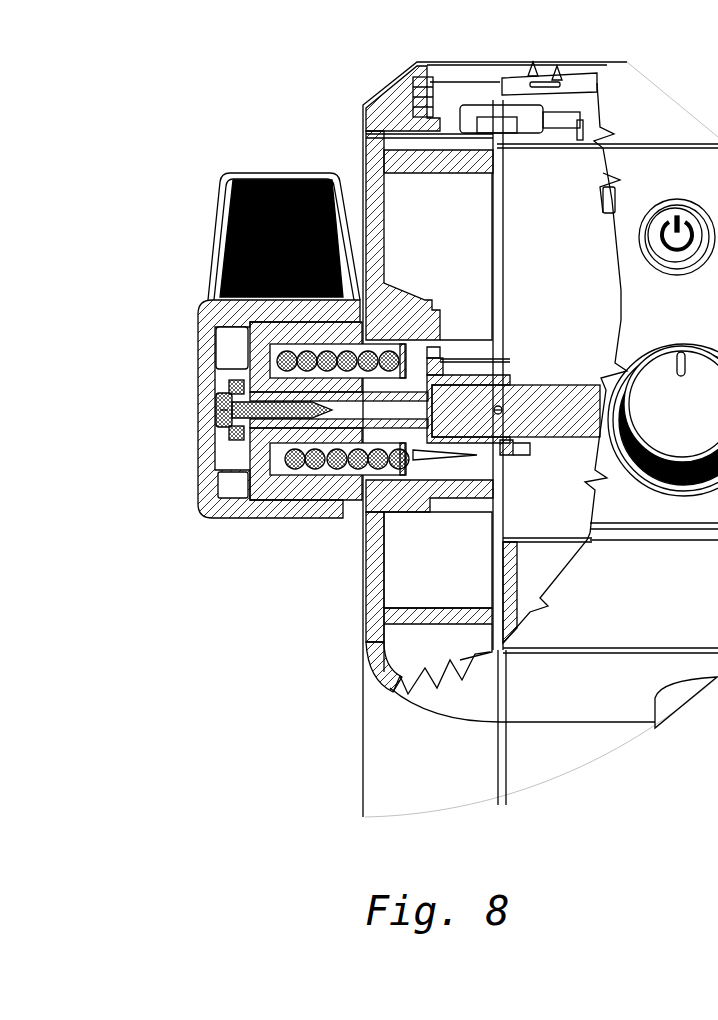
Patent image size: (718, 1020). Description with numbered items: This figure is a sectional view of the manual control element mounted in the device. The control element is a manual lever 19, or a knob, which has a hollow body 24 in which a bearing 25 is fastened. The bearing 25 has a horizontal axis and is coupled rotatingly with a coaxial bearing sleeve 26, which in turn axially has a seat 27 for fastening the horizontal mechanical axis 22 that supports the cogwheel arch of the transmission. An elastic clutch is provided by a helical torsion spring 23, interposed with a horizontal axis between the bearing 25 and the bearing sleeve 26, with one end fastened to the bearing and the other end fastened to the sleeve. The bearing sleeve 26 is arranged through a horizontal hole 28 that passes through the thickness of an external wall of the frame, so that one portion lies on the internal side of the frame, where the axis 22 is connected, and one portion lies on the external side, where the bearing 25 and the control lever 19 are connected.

The manual lever 19 is at (219, 178).
The horizontal mechanical axis 22 is at (557, 403).
The torsion spring 23 is at (273, 500).
The hollow body 24 is at (197, 352).
The bearing 25 is at (203, 517).
The bearing sleeve 26 is at (467, 468).
The seat 27 is at (445, 375).
The horizontal hole 28 is at (380, 490).